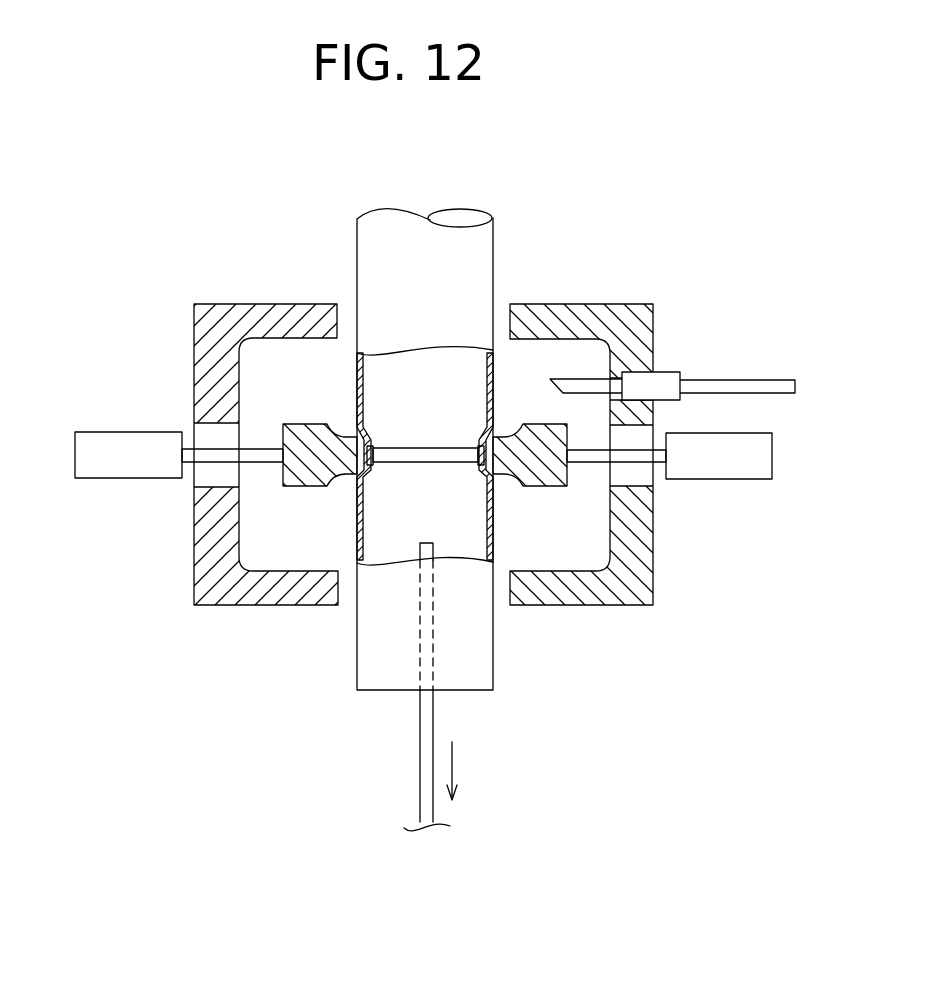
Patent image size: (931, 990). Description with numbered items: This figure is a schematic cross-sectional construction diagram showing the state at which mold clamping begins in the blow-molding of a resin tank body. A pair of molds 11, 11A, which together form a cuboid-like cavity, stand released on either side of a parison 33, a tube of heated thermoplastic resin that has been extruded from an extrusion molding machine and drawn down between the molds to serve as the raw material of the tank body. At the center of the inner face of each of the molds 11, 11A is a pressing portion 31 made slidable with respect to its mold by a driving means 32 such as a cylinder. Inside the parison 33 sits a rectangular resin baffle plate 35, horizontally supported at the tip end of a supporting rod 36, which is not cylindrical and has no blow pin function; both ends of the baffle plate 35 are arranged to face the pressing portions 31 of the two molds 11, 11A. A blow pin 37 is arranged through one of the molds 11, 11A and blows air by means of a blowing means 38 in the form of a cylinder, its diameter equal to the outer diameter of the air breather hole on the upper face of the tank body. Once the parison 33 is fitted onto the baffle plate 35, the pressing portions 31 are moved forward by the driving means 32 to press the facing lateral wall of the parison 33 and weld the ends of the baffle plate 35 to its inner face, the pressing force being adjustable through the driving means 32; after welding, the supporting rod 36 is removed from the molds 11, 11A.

The mold 11 is at (234, 303).
The mold 11A is at (644, 303).
The pressing portion 31 is at (298, 478).
The driving means 32 is at (128, 465).
The parison 33 is at (466, 258).
The baffle plate 35 is at (412, 463).
The supporting rod 36 is at (420, 777).
The blow pin 37 is at (583, 379).
The blowing means 38 is at (662, 383).